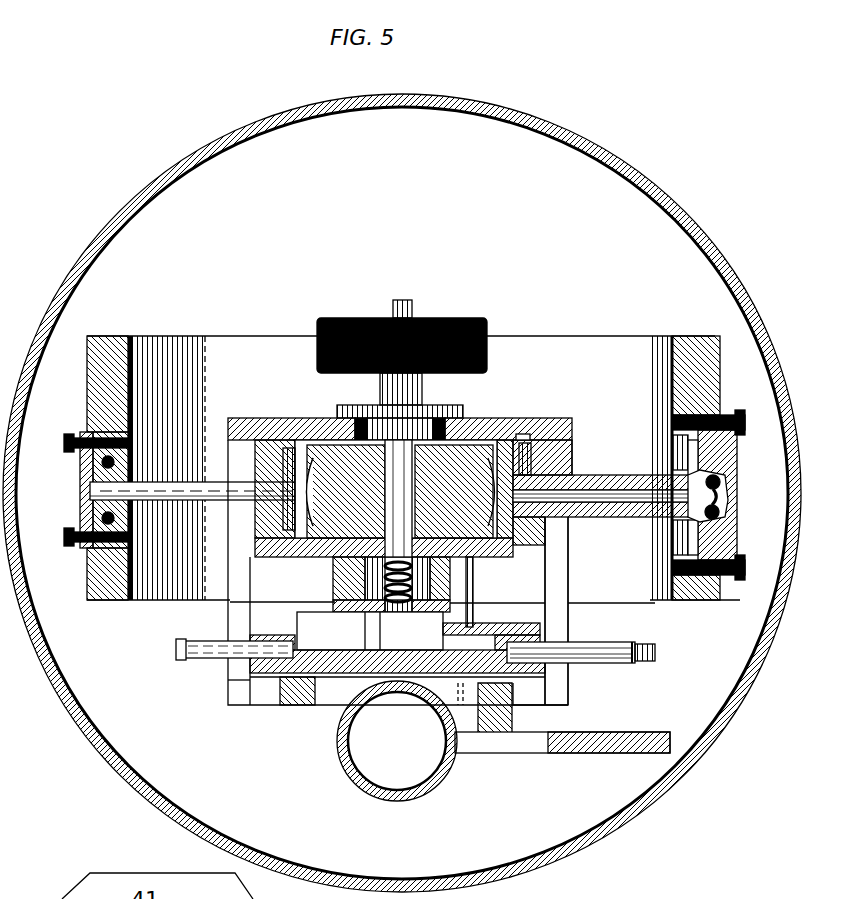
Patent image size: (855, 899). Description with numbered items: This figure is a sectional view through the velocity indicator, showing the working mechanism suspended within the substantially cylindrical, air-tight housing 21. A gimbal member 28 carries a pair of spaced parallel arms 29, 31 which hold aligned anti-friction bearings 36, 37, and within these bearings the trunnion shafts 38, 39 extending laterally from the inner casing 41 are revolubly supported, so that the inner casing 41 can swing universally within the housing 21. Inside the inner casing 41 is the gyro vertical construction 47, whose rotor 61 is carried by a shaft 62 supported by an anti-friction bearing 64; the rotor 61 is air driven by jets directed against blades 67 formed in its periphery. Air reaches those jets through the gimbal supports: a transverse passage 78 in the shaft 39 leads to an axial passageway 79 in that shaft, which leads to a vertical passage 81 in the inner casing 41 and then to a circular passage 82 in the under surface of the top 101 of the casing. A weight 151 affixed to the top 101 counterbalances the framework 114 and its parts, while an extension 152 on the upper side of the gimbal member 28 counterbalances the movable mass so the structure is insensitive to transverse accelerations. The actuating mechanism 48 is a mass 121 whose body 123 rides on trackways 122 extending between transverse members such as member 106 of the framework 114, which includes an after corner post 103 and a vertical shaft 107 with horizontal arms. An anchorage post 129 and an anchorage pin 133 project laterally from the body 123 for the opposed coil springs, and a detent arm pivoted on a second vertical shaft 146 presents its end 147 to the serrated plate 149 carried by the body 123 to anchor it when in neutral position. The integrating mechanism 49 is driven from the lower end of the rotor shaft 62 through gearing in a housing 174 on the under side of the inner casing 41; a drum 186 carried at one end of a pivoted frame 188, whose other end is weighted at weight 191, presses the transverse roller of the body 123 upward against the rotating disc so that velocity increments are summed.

The housing 21 is at (672, 219).
The gimbal member 28 is at (572, 331).
The arm 29 is at (690, 600).
The arm 31 is at (106, 592).
The anti-friction bearing 36 is at (126, 516).
The anti-friction bearing 37 is at (728, 522).
The trunnion shaft 38 is at (210, 484).
The trunnion shaft 39 is at (612, 520).
The inner casing 41 is at (548, 540).
The gyro vertical construction 47 is at (264, 570).
The actuating mechanism 48 is at (330, 697).
The integrating mechanism 49 is at (478, 780).
The rotor 61 is at (454, 491).
The shaft 62 is at (386, 502).
The anti-friction bearing 64 is at (346, 613).
The blades 67 is at (318, 486).
The transverse passage 78 is at (726, 492).
The axial passageway 79 is at (583, 502).
The vertical passage 81 is at (534, 458).
The circular passage 82 is at (521, 433).
The top 101 is at (478, 418).
The after corner post 103 is at (562, 626).
The transverse member 106 is at (326, 700).
The vertical shaft 107 is at (376, 613).
The framework 114 is at (575, 428).
The mass 121 is at (266, 686).
The trackways 122 is at (286, 698).
The body 123 is at (292, 634).
The anchorage post 129 is at (184, 660).
The anchorage pin 133 is at (650, 661).
The second vertical shaft 146 is at (466, 575).
The end 147 is at (445, 630).
The plate 149 is at (509, 622).
The weight 151 is at (352, 318).
The extension 152 is at (94, 366).
The housing 174 is at (346, 586).
The drum 186 is at (374, 792).
The frame 188 is at (538, 747).
The weight 191 is at (605, 748).